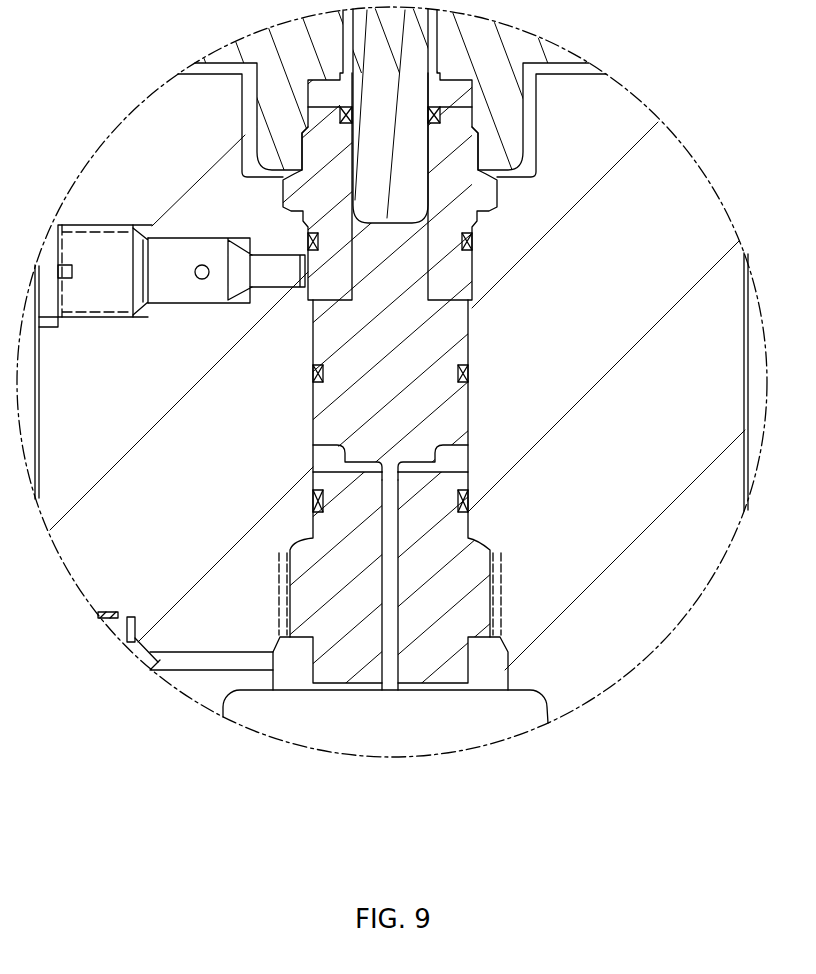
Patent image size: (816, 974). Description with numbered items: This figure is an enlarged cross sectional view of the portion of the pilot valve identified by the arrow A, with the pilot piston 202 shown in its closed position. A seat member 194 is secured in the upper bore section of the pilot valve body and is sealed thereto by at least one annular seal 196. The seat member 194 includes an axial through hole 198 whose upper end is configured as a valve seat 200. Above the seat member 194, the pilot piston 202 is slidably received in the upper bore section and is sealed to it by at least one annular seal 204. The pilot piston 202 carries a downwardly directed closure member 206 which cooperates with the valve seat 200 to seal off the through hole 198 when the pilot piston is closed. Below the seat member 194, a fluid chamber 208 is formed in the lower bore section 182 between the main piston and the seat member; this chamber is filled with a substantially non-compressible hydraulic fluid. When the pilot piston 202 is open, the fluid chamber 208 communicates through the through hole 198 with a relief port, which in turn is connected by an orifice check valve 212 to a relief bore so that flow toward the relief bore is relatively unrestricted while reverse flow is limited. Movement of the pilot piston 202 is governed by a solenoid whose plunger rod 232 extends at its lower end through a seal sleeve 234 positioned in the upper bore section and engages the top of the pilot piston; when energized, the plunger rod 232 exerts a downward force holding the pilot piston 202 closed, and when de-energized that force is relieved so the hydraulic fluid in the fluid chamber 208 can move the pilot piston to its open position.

The lower bore section 182 is at (545, 712).
The seat member 194 is at (484, 579).
The annular seal 196 is at (468, 503).
The axial through hole 198 is at (388, 690).
The valve seat 200 is at (400, 479).
The pilot piston 202 is at (466, 400).
The annular seal 204 is at (470, 372).
The closure member 206 is at (386, 469).
The fluid chamber 208 is at (435, 736).
The orifice check valve 212 is at (197, 670).
The plunger rod 232 is at (421, 163).
The seal sleeve 234 is at (468, 276).
The arrow A is at (207, 711).